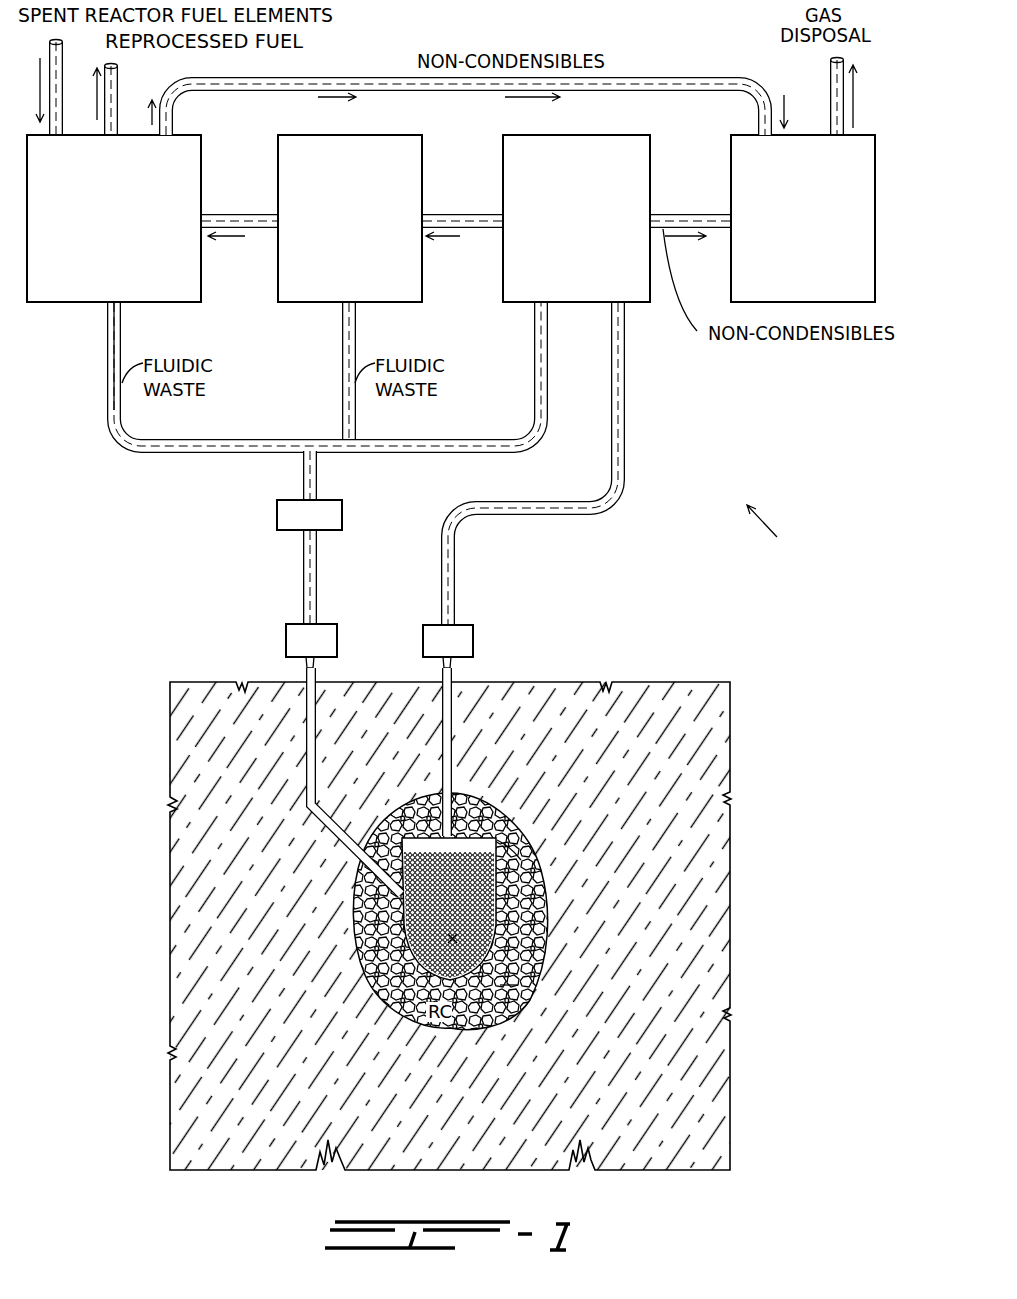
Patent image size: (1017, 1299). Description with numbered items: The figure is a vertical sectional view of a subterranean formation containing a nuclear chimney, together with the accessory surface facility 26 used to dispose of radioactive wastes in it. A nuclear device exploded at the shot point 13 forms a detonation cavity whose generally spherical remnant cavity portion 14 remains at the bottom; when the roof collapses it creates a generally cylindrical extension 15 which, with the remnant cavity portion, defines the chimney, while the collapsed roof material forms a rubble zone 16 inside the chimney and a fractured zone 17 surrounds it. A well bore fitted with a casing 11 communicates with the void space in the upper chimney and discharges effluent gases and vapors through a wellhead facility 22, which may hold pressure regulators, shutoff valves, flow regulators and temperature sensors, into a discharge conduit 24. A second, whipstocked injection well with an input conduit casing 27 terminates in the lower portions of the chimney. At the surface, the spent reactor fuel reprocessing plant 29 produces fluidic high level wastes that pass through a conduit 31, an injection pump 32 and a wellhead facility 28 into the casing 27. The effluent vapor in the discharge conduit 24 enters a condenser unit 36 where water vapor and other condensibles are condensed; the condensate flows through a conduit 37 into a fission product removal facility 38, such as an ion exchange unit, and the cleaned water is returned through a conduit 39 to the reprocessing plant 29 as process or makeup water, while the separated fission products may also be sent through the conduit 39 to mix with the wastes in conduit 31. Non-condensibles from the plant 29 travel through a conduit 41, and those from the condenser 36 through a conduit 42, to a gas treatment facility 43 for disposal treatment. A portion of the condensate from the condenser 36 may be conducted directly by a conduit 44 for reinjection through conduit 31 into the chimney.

The casing 11 is at (443, 743).
The shot point 13 is at (458, 932).
The remnant cavity portion 14 is at (410, 948).
The cylindrical extension 15 is at (520, 857).
The rubble zone 16 is at (466, 907).
The fractured zone 17 is at (513, 984).
The wellhead facility 22 is at (422, 626).
The discharge conduit 24 is at (441, 575).
The surface facility 26 is at (778, 533).
The input conduit casing 27 is at (307, 743).
The wellhead facility 28 is at (286, 630).
The spent reactor fuel reprocessing plant 29 is at (128, 285).
The conduit 31 is at (107, 391).
The injection pump 32 is at (276, 515).
The condenser unit 36 is at (589, 285).
The conduit 37 is at (462, 215).
The fission product removal facility 38 is at (363, 285).
The conduit 39 is at (237, 215).
The conduit 41 is at (323, 78).
The conduit 42 is at (687, 215).
The gas treatment facility 43 is at (815, 285).
The conduit 44 is at (534, 392).